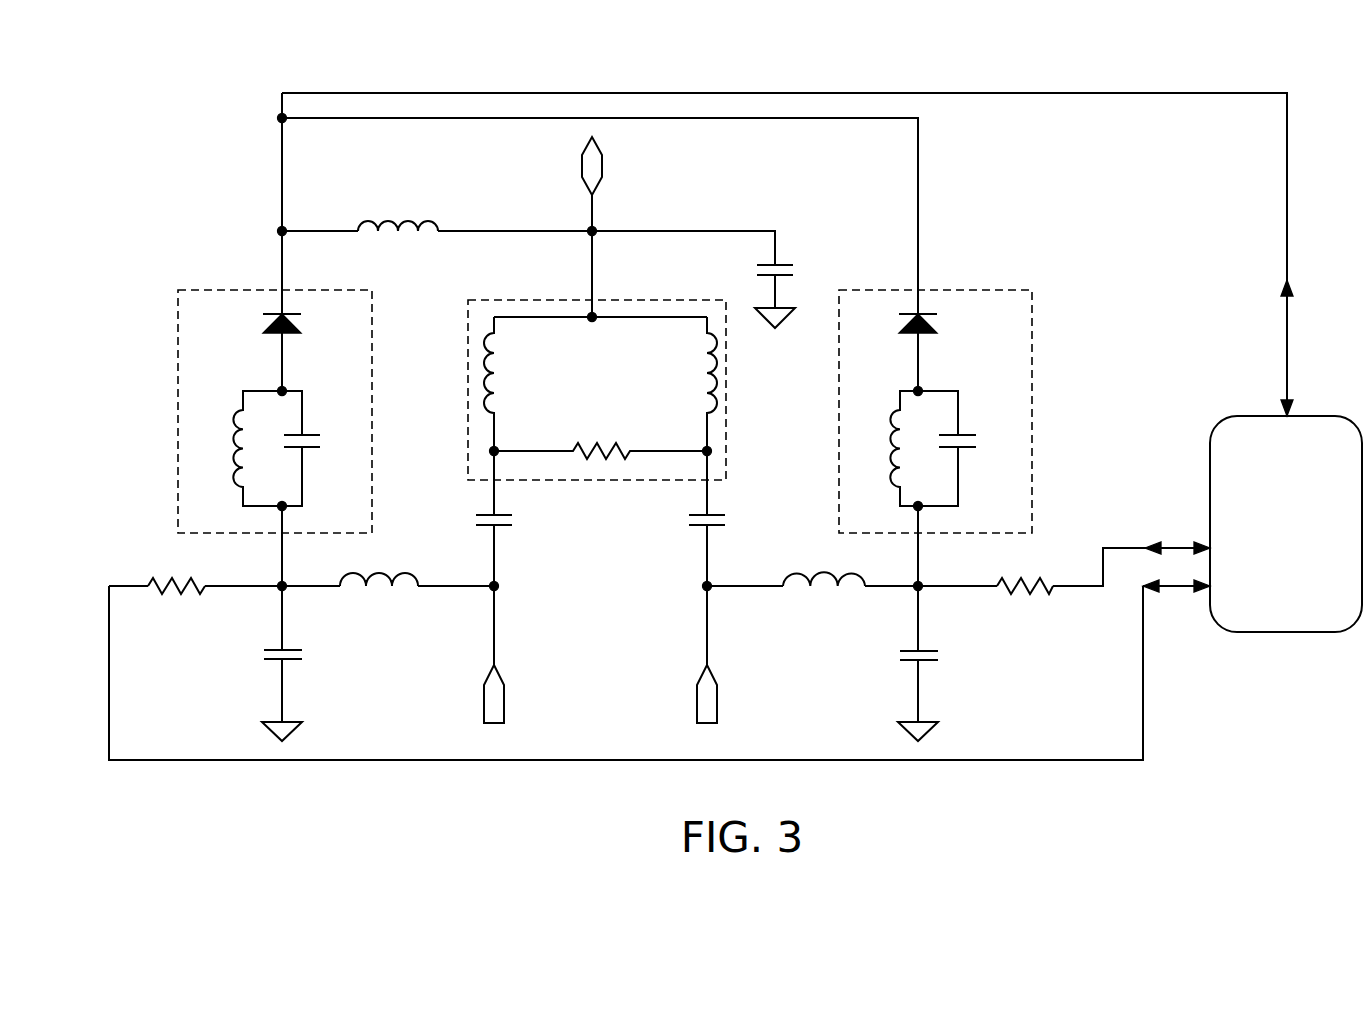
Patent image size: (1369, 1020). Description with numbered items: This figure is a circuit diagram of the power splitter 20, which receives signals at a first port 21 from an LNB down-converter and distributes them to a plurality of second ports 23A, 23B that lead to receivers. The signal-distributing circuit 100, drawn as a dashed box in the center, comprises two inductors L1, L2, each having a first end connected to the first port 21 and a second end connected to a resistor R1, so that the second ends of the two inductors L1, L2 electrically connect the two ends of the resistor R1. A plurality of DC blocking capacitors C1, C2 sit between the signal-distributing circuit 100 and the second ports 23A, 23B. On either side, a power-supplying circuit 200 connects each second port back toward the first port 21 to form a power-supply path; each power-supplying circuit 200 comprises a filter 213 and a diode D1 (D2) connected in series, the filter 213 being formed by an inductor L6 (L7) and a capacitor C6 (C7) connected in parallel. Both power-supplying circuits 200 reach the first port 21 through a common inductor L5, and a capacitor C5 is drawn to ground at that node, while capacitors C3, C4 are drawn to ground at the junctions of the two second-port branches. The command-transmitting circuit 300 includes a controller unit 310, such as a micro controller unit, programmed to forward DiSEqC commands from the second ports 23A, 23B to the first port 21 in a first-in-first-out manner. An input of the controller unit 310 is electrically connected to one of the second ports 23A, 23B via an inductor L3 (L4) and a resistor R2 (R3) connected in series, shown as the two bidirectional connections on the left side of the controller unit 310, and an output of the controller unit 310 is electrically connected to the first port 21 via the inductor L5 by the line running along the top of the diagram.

The power splitter 20 is at (136, 68).
The first port 21 is at (603, 166).
The second port 23A is at (505, 703).
The second port 23B is at (696, 703).
The signal-distributing circuit 100 is at (497, 299).
The power-supplying circuit 200 is at (199, 290).
The filter 213 is at (197, 412).
The command-transmitting circuit 300 is at (1182, 488).
The controller unit 310 is at (1313, 416).
The inductor L1 is at (510, 384).
The inductor L2 is at (688, 384).
The inductor L3 is at (379, 600).
The inductor L4 is at (824, 599).
The inductor L5 is at (398, 209).
The inductor L6 is at (236, 448).
The inductor L7 is at (883, 448).
The DC blocking capacitor C1 is at (516, 518).
The DC blocking capacitor C2 is at (688, 518).
The capacitor C3 is at (263, 655).
The capacitor C4 is at (941, 655).
The capacitor C5 is at (797, 268).
The capacitor C6 is at (322, 448).
The capacitor C7 is at (969, 448).
The resistor R1 is at (600, 433).
The resistor R2 is at (176, 602).
The resistor R3 is at (1025, 602).
The diode D1 is at (262, 325).
The diode D2 is at (942, 325).